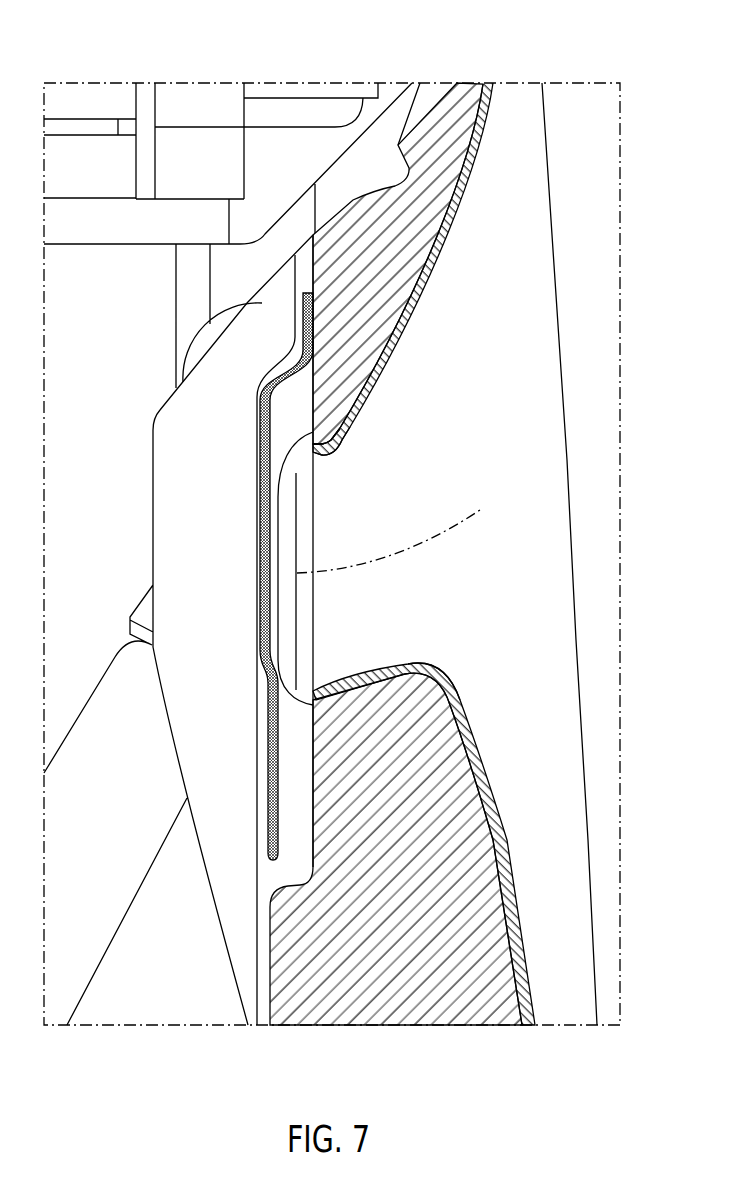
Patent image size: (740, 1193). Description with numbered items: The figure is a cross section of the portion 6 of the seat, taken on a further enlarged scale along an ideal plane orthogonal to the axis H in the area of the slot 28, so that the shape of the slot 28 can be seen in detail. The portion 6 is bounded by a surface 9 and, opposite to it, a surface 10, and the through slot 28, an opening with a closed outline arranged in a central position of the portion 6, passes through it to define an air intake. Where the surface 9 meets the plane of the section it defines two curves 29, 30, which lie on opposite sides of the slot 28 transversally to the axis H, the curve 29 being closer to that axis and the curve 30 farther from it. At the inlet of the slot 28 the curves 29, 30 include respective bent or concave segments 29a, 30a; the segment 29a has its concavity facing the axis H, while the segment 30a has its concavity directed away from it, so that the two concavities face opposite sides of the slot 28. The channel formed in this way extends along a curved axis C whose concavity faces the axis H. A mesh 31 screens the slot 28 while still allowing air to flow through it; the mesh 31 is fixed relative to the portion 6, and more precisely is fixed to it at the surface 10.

The portion 6 is at (377, 213).
The surface 9 is at (485, 750).
The surface 10 is at (270, 958).
The through slot 28 is at (310, 687).
The curve 29 is at (446, 247).
The bent or concave segment 29a is at (332, 458).
The curve 30 is at (517, 906).
The bent or concave segment 30a is at (450, 677).
The mesh 31 is at (268, 740).
The curved axis C is at (397, 529).